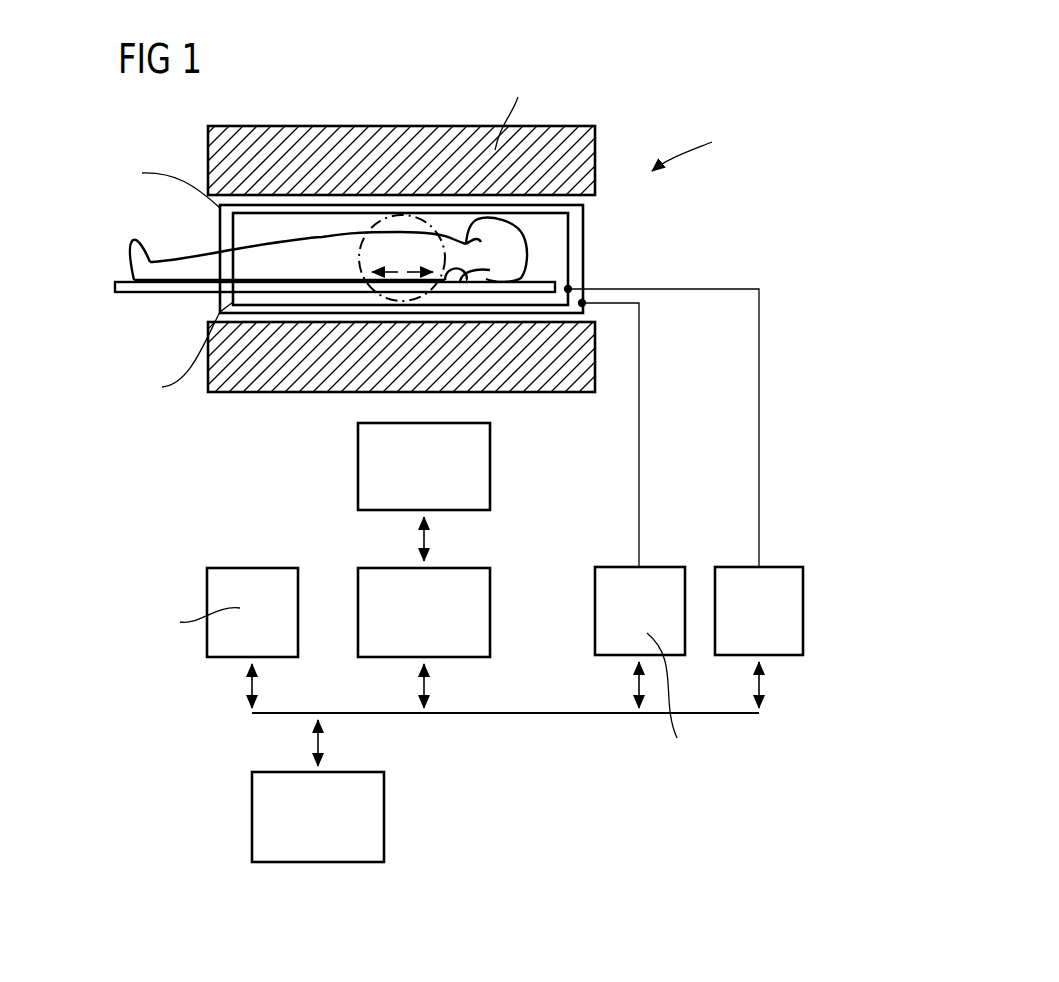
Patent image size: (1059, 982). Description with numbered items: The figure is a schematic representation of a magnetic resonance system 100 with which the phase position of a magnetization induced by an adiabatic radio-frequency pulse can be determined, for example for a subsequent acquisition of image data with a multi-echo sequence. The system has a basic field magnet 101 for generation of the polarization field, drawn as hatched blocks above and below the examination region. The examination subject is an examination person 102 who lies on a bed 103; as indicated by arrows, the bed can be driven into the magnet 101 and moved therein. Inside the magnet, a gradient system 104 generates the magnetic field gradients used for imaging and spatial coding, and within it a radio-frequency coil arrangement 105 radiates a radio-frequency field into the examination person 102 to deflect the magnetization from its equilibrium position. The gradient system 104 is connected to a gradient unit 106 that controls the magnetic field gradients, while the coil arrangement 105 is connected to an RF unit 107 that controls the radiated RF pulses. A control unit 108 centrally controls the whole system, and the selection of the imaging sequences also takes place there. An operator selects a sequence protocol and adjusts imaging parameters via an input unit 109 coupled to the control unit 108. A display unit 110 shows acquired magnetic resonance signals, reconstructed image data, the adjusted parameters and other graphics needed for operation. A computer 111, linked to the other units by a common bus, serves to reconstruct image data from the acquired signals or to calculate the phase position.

The magnetic resonance system 100 is at (617, 144).
The basic field magnet 101 is at (414, 133).
The examination person 102 is at (172, 262).
The bed 103 is at (155, 287).
The gradient system 104 is at (583, 217).
The radio-frequency coil arrangement 105 is at (568, 253).
The gradient unit 106 is at (663, 567).
The RF unit 107 is at (783, 567).
The control unit 108 is at (490, 612).
The input unit 109 is at (490, 466).
The display unit 110 is at (255, 567).
The computer 111 is at (385, 815).